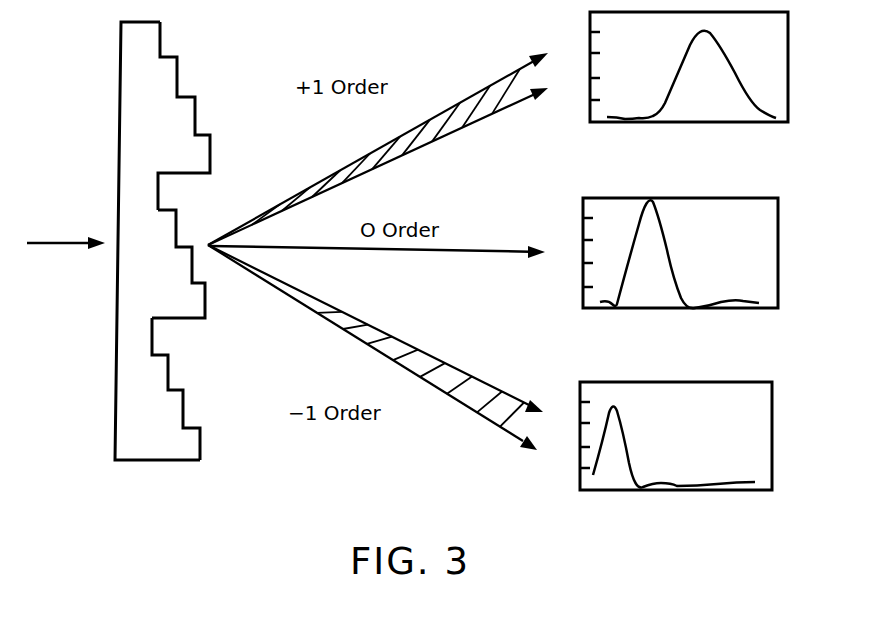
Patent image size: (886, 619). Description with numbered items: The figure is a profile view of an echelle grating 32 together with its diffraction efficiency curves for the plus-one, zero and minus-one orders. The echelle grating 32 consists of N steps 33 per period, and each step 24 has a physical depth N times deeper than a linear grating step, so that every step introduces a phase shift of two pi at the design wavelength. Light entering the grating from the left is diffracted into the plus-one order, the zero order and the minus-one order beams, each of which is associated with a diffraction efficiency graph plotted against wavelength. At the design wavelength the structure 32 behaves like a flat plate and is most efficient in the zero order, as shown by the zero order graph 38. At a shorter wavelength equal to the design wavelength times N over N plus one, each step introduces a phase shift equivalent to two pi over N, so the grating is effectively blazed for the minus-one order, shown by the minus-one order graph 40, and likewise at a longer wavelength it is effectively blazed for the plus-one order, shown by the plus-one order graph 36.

The step 24 is at (211, 155).
The echelle grating 32 is at (95, 445).
The N steps per period 33 is at (209, 462).
The +1 order diffraction efficiency graph 36 is at (788, 68).
The 0 order diffraction efficiency graph 38 is at (778, 258).
The −1 order diffraction efficiency graph 40 is at (772, 447).